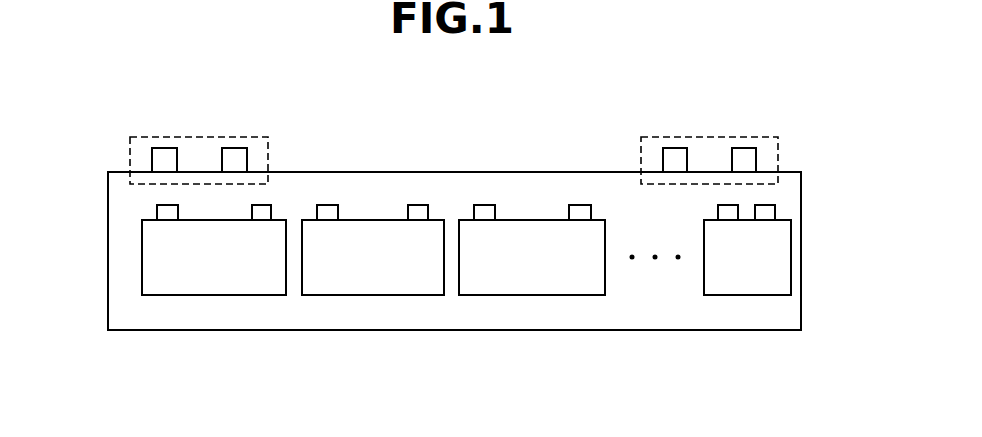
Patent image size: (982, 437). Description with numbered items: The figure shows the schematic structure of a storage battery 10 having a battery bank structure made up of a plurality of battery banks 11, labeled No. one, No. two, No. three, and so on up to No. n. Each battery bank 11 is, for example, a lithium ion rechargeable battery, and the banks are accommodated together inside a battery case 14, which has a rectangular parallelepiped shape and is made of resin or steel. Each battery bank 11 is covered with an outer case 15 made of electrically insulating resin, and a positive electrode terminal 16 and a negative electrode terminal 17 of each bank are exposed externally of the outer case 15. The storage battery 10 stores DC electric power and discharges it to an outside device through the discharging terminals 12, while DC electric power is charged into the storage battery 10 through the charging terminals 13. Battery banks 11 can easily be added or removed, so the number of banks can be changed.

The storage battery 10 is at (519, 100).
The battery bank 11 is at (228, 280).
The discharging terminals 12 is at (193, 132).
The charging terminals 13 is at (704, 132).
The battery case 14 is at (801, 250).
The outer case 15 is at (605, 265).
The positive electrode terminal 16 is at (170, 212).
The negative electrode terminal 17 is at (262, 206).